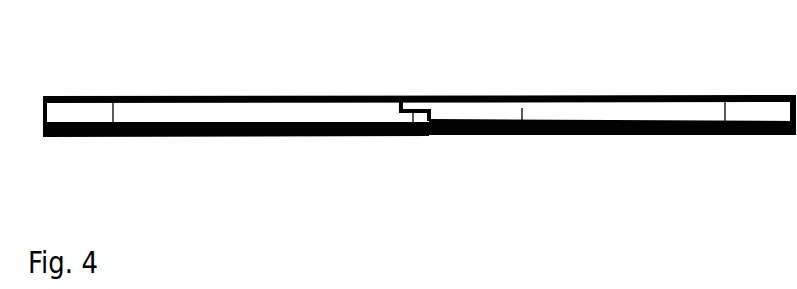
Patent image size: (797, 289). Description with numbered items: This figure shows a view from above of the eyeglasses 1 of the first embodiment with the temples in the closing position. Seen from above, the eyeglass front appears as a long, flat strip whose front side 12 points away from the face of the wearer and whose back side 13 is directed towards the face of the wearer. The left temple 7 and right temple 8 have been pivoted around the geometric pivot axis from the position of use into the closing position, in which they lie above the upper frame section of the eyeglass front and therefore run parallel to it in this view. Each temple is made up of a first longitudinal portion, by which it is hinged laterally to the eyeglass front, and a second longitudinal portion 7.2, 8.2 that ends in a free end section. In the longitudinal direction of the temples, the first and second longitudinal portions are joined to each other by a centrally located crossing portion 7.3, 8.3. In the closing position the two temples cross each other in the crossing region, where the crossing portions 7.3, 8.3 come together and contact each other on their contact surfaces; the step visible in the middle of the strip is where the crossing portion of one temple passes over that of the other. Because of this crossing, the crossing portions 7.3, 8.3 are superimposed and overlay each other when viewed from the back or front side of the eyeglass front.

The eyeglasses 1 is at (61, 148).
The front side 12 is at (196, 88).
The left temple 7 is at (650, 110).
The second longitudinal portion 7.2 is at (522, 135).
The crossing portion 7.3 is at (414, 96).
The right temple 8 is at (162, 112).
The second longitudinal portion 8.2 is at (265, 113).
The crossing portion 8.3 is at (413, 136).
The back side 13 is at (724, 147).